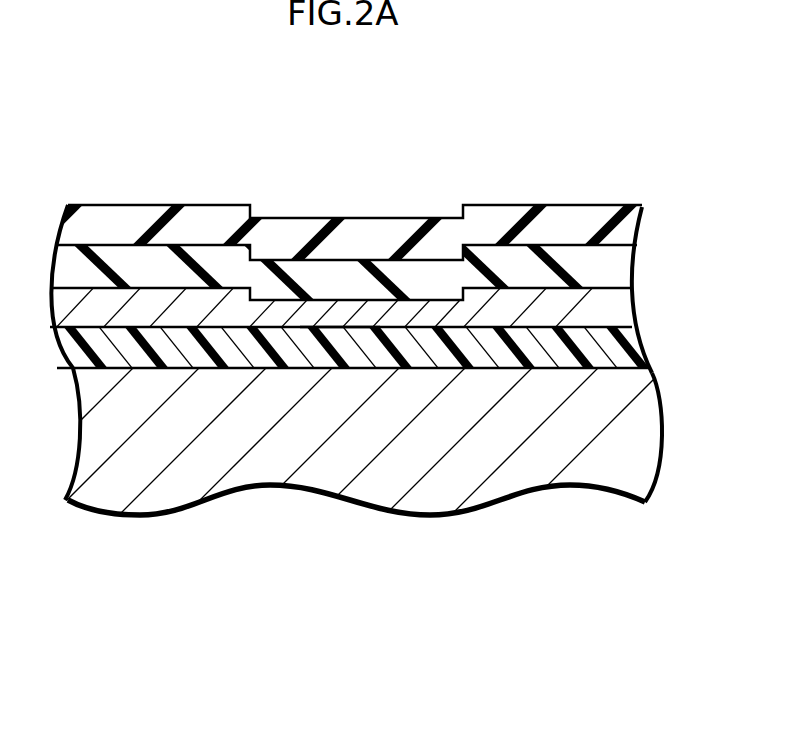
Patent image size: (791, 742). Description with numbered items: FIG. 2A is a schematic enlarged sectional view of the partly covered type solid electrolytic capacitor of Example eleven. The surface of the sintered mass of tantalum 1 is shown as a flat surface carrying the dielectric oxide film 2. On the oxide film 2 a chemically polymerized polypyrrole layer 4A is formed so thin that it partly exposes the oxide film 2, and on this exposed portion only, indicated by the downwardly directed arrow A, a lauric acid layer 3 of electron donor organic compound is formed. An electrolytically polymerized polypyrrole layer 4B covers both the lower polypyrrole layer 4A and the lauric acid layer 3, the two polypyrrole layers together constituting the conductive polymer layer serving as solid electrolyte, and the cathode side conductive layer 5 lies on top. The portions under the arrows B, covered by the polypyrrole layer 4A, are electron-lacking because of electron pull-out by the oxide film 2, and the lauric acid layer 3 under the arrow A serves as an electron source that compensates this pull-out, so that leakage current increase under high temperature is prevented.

The sintered mass of tantalum 1 is at (642, 413).
The dielectric oxide film 2 is at (628, 354).
The lauric acid layer 3 is at (337, 322).
The chemically polymerized polypyrrole layer 4A is at (606, 314).
The electrolytically polymerized polypyrrole layer 4B is at (605, 274).
The cathode side conductive layer 5 is at (593, 217).
The arrow A is at (356, 198).
The arrows B is at (143, 198).